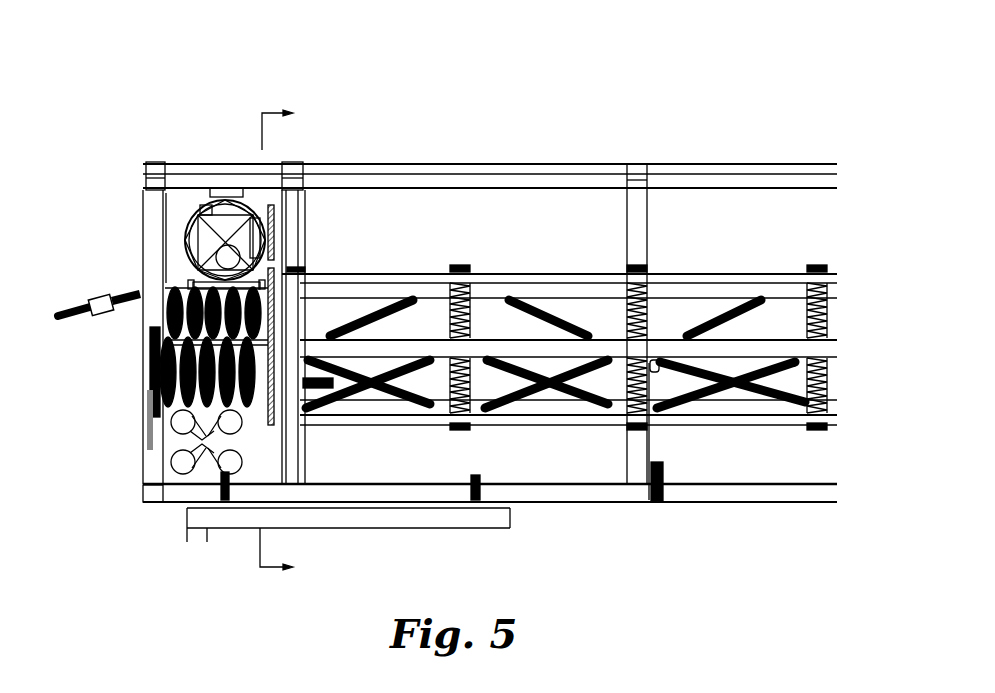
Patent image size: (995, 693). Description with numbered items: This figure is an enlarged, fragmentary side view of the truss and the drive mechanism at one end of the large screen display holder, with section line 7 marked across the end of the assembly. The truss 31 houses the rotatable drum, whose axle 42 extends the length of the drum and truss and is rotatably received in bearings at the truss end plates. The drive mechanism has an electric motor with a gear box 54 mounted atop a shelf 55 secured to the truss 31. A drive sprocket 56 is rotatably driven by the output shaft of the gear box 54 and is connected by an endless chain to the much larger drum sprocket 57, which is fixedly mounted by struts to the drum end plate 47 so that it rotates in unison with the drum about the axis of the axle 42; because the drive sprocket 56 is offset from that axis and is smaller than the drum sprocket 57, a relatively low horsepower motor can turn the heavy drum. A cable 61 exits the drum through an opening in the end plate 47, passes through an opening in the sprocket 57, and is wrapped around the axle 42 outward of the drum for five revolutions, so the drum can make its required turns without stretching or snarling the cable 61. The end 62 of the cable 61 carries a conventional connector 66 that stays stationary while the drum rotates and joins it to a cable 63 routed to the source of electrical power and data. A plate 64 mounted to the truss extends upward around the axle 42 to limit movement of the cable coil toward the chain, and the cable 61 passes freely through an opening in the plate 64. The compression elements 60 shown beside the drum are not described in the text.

The truss 31 is at (440, 257).
The axle 42 is at (147, 367).
The drum end plate 47 is at (303, 313).
The gear box 54 is at (220, 222).
The shelf 55 is at (198, 282).
The drive sprocket 56 is at (272, 203).
The drum sprocket 57 is at (276, 283).
The springs 60 is at (163, 318).
The cable 61 is at (315, 390).
The cable end 62 is at (130, 293).
The cable 63 is at (72, 309).
The plate 64 is at (255, 417).
The connector 66 is at (102, 297).
The section line 7- 7 is at (276, 341).